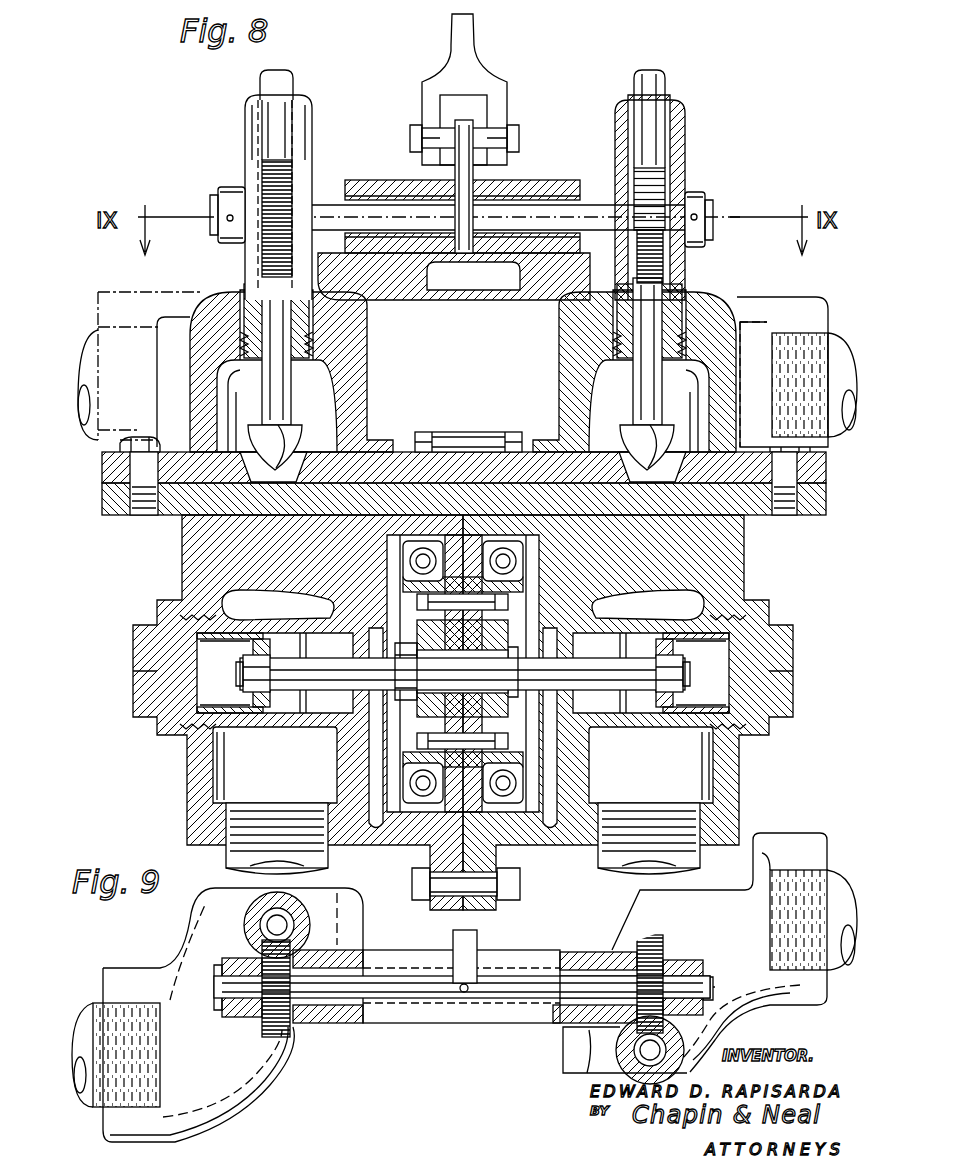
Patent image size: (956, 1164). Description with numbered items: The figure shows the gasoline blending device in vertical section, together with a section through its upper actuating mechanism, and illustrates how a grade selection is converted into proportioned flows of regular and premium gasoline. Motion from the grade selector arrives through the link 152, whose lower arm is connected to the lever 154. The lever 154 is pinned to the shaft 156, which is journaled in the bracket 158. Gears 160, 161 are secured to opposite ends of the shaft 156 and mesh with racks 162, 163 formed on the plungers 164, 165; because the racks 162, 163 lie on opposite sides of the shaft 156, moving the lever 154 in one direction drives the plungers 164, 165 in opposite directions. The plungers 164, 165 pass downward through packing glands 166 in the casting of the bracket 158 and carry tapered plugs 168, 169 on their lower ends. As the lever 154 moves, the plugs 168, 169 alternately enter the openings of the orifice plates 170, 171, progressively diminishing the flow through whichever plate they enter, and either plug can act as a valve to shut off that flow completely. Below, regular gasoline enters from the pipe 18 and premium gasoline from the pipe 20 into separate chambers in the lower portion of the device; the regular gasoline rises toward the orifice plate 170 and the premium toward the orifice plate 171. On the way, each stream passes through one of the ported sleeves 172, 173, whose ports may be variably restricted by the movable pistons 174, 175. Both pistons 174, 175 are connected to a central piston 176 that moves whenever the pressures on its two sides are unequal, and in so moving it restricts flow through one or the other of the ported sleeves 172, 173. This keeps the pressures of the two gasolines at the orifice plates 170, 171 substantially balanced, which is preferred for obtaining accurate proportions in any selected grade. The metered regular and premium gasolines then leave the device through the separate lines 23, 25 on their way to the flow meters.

In FIG. 8, the pipe 18 is at (330, 862).
In FIG. 8, the pipe 20 is at (700, 862).
In FIG. 8, the line 23 is at (852, 333).
In FIG. 9, the line 23 is at (845, 870).
In FIG. 8, the line 25 is at (98, 300).
In FIG. 9, the line 25 is at (103, 968).
In FIG. 8, the link 152 is at (475, 30).
In FIG. 8, the lever 154 is at (470, 180).
In FIG. 9, the lever 154 is at (480, 942).
In FIG. 8, the shaft 156 is at (538, 255).
In FIG. 9, the shaft 156 is at (572, 952).
In FIG. 8, the bracket 158 is at (352, 258).
In FIG. 9, the bracket 158 is at (388, 950).
In FIG. 8, the gear 160 is at (292, 215).
In FIG. 9, the gear 160 is at (268, 1037).
In FIG. 8, the gear 161 is at (662, 265).
In FIG. 9, the gear 161 is at (656, 938).
In FIG. 8, the rack 162 is at (260, 172).
In FIG. 9, the rack 162 is at (247, 913).
In FIG. 8, the rack 163 is at (662, 176).
In FIG. 9, the rack 163 is at (668, 1040).
In FIG. 8, the plunger 164 is at (291, 400).
In FIG. 8, the plunger 165 is at (662, 400).
In FIG. 8, the packing gland 166 is at (293, 317).
In FIG. 8, the tapered plug 168 is at (292, 450).
In FIG. 8, the tapered plug 169 is at (660, 460).
In FIG. 8, the orifice plate 170 is at (312, 485).
In FIG. 8, the orifice plate 171 is at (607, 486).
In FIG. 8, the ported sleeve 172 is at (247, 728).
In FIG. 8, the ported sleeve 173 is at (650, 728).
In FIG. 8, the piston 174 is at (243, 668).
In FIG. 8, the piston 175 is at (680, 692).
In FIG. 8, the central piston 176 is at (500, 592).